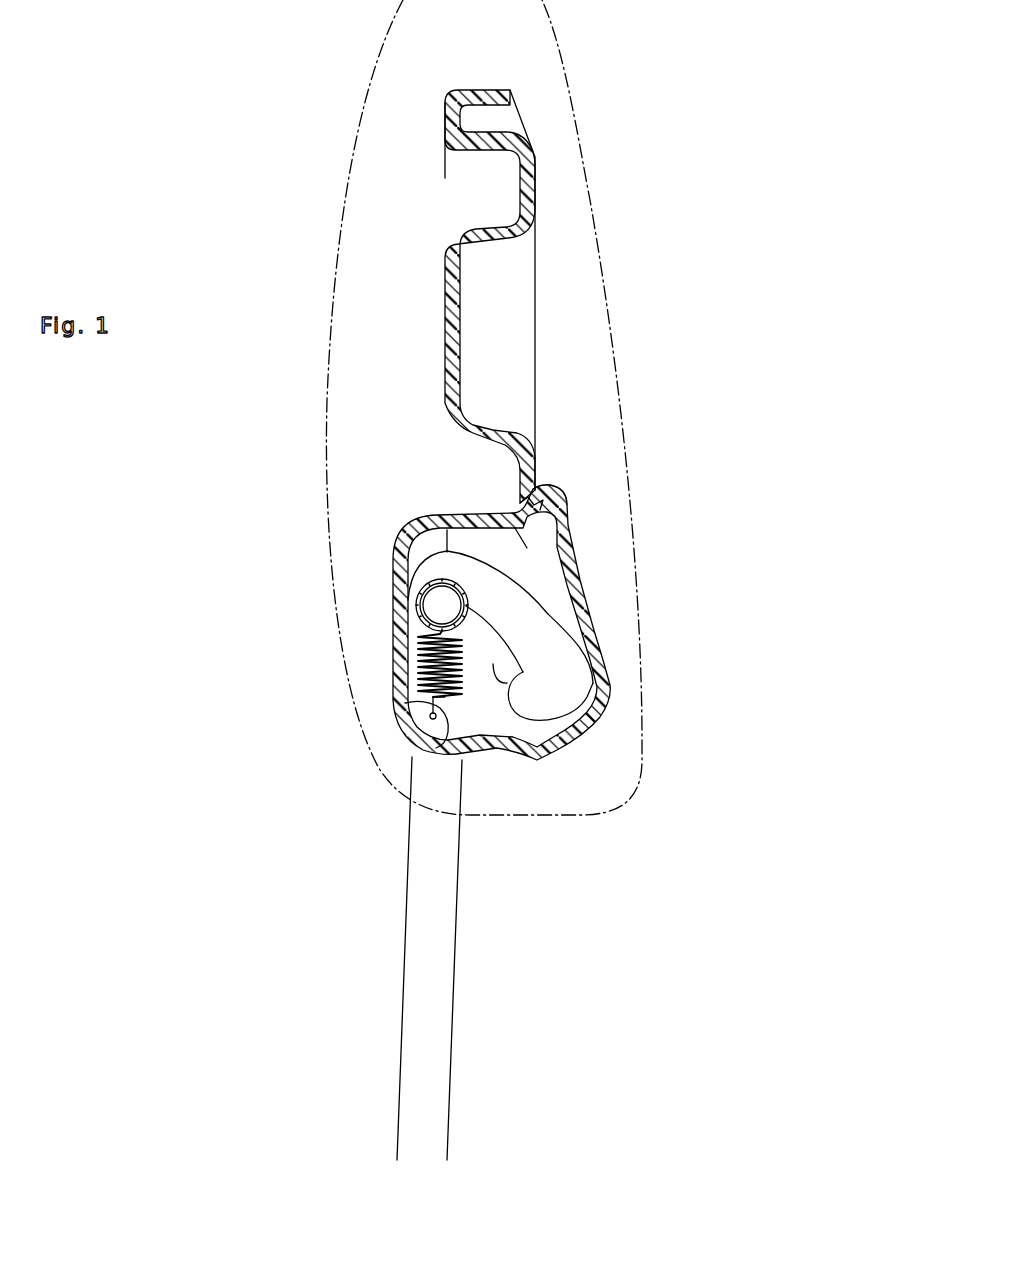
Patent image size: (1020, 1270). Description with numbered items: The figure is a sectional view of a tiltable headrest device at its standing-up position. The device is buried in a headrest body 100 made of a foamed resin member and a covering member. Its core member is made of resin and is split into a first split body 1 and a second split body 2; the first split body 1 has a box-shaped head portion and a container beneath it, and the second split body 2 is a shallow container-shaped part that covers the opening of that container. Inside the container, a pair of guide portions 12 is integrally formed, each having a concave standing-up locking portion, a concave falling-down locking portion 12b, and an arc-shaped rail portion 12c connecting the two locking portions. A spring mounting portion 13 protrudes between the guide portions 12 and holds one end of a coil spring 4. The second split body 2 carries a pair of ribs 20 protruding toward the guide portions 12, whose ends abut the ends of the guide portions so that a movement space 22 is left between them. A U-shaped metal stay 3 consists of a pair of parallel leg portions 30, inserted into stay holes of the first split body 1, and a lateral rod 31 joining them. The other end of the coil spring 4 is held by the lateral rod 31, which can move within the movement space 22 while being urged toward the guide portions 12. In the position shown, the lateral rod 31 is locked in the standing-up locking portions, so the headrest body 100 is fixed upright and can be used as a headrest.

The first split body 1 is at (444, 312).
The headrest body 100 is at (623, 425).
The second split body 2 is at (568, 547).
The ribs 20 is at (527, 503).
The movement space 22 is at (513, 609).
The guide portions 12 is at (523, 677).
The falling-down locking portion 12b is at (513, 703).
The rail portion 12c is at (505, 640).
The spring mounting portion 13 is at (448, 723).
The lateral rod 31 is at (436, 592).
The coil spring 4 is at (425, 668).
The leg portions 30 is at (420, 937).
The stay 3 is at (470, 1004).